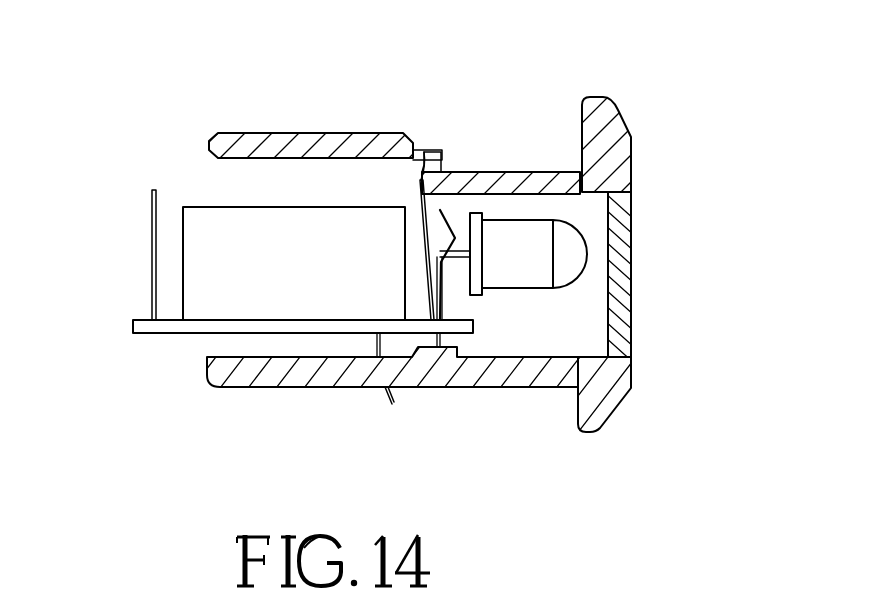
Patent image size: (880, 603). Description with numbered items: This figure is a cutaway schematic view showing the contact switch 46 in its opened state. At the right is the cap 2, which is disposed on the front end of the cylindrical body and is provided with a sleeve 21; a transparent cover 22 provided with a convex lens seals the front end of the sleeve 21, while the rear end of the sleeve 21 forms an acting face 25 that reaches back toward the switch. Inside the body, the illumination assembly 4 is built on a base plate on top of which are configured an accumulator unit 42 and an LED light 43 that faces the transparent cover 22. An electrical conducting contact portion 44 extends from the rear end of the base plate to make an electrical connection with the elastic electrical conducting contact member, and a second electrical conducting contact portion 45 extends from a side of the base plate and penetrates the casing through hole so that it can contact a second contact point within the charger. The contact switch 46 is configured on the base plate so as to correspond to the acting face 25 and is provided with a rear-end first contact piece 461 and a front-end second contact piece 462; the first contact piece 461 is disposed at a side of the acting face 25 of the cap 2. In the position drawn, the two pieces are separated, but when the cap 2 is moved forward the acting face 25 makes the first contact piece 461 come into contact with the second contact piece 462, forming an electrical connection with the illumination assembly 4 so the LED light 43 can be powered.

The cap 2 is at (627, 113).
The sleeve 21 is at (493, 182).
The transparent cover 22 is at (628, 267).
The acting face 25 is at (420, 157).
The illumination assembly 4 is at (186, 334).
The accumulator unit 42 is at (218, 224).
The LED light 43 is at (567, 250).
The electrical conducting contact portion 44 is at (155, 237).
The second electrical conducting contact portion 45 is at (390, 393).
The contact switch 46 is at (465, 42).
The first contact piece 461 is at (428, 190).
The second contact piece 462 is at (448, 210).